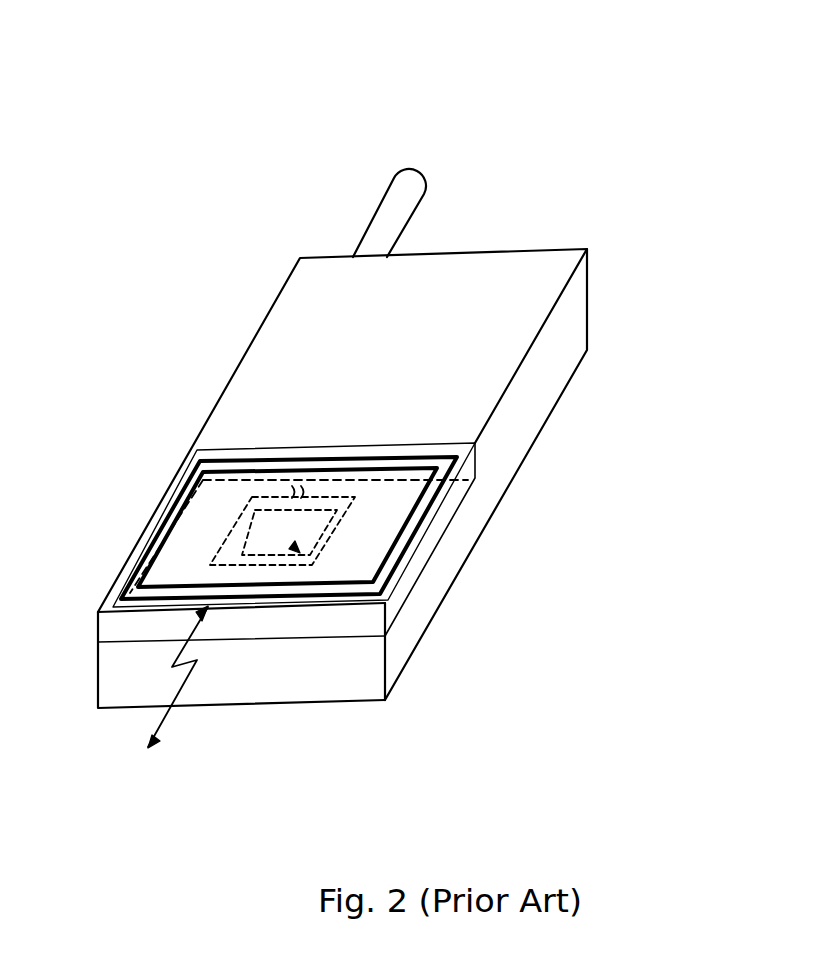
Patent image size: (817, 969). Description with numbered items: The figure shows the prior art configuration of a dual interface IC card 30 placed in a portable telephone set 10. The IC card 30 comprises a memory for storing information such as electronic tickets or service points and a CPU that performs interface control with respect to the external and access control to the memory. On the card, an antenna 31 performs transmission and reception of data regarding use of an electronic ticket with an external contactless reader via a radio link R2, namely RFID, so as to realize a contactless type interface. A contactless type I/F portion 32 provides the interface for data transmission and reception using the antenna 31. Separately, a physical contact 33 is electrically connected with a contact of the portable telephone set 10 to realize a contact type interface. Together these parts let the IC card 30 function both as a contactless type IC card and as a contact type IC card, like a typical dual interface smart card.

The portable telephone set 10 is at (627, 204).
The IC card 30 is at (172, 493).
The antenna 31 is at (437, 493).
The contactless type I/F portion 32 is at (308, 556).
The physical contact 33 is at (240, 566).
The radio link R2 is at (172, 712).